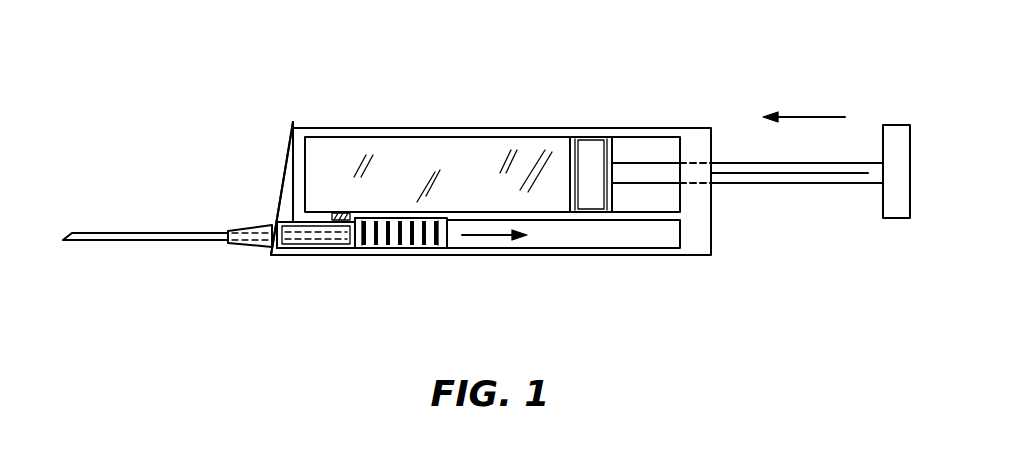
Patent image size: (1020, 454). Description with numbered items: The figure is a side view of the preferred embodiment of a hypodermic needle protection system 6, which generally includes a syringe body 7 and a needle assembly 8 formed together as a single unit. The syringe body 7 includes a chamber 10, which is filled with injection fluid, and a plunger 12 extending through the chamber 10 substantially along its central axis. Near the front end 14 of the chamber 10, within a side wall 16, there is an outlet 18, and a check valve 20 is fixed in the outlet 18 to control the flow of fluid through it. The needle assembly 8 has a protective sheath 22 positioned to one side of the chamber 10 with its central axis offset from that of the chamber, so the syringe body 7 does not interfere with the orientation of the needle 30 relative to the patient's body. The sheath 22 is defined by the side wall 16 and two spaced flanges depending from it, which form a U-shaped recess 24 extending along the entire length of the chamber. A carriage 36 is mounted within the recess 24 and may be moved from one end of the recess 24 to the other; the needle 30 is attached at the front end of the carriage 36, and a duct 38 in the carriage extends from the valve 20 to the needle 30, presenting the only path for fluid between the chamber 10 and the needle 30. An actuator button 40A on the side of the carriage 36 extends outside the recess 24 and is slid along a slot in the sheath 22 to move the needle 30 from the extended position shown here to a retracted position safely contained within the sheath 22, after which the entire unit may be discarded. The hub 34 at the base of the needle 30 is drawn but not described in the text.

The hypodermic needle protection system 6 is at (633, 57).
The syringe body 7 is at (640, 128).
The needle assembly 8 is at (380, 248).
The chamber 10 is at (427, 148).
The plunger 12 is at (893, 210).
The front end 14 is at (285, 190).
The side wall 16 is at (483, 218).
The outlet 18 is at (351, 219).
The check valve 20 is at (335, 212).
The protective sheath 22 is at (638, 252).
The recess 24 is at (550, 233).
The needle 30 is at (122, 233).
The needle hub 34 is at (247, 247).
The carriage 36 is at (347, 248).
The duct 38 is at (315, 250).
The actuator button 40A is at (433, 248).